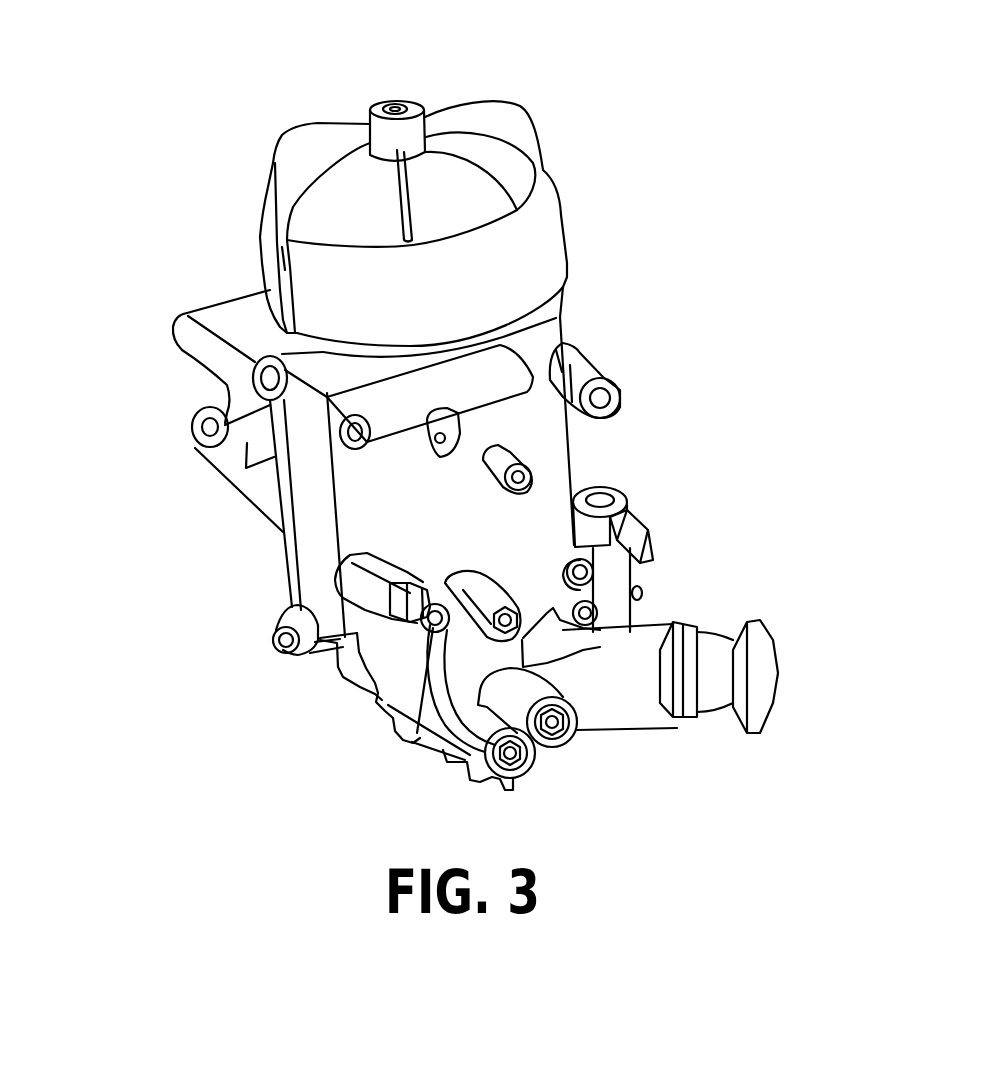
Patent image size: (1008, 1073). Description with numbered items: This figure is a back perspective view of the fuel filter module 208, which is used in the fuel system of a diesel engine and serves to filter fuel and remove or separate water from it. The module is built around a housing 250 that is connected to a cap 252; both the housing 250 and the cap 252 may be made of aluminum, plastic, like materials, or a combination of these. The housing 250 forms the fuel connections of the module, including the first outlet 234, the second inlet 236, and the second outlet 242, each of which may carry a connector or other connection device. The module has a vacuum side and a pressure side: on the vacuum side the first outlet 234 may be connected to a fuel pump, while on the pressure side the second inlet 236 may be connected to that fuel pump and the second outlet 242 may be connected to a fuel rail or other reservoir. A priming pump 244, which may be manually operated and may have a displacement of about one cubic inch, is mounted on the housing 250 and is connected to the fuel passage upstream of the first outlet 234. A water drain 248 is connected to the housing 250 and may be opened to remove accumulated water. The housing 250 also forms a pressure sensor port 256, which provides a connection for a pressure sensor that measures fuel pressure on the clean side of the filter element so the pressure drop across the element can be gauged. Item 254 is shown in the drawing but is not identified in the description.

The fuel filter module 208 is at (727, 34).
The cap 252 is at (550, 220).
The housing 250 is at (560, 450).
The second inlet 236 is at (620, 390).
The second outlet 242 is at (270, 378).
The pressure sensor port 256 is at (278, 640).
The water drain 248 is at (627, 523).
The priming pump 244 is at (630, 635).
The lower housing 254 is at (403, 743).
The first outlet 234 is at (573, 732).